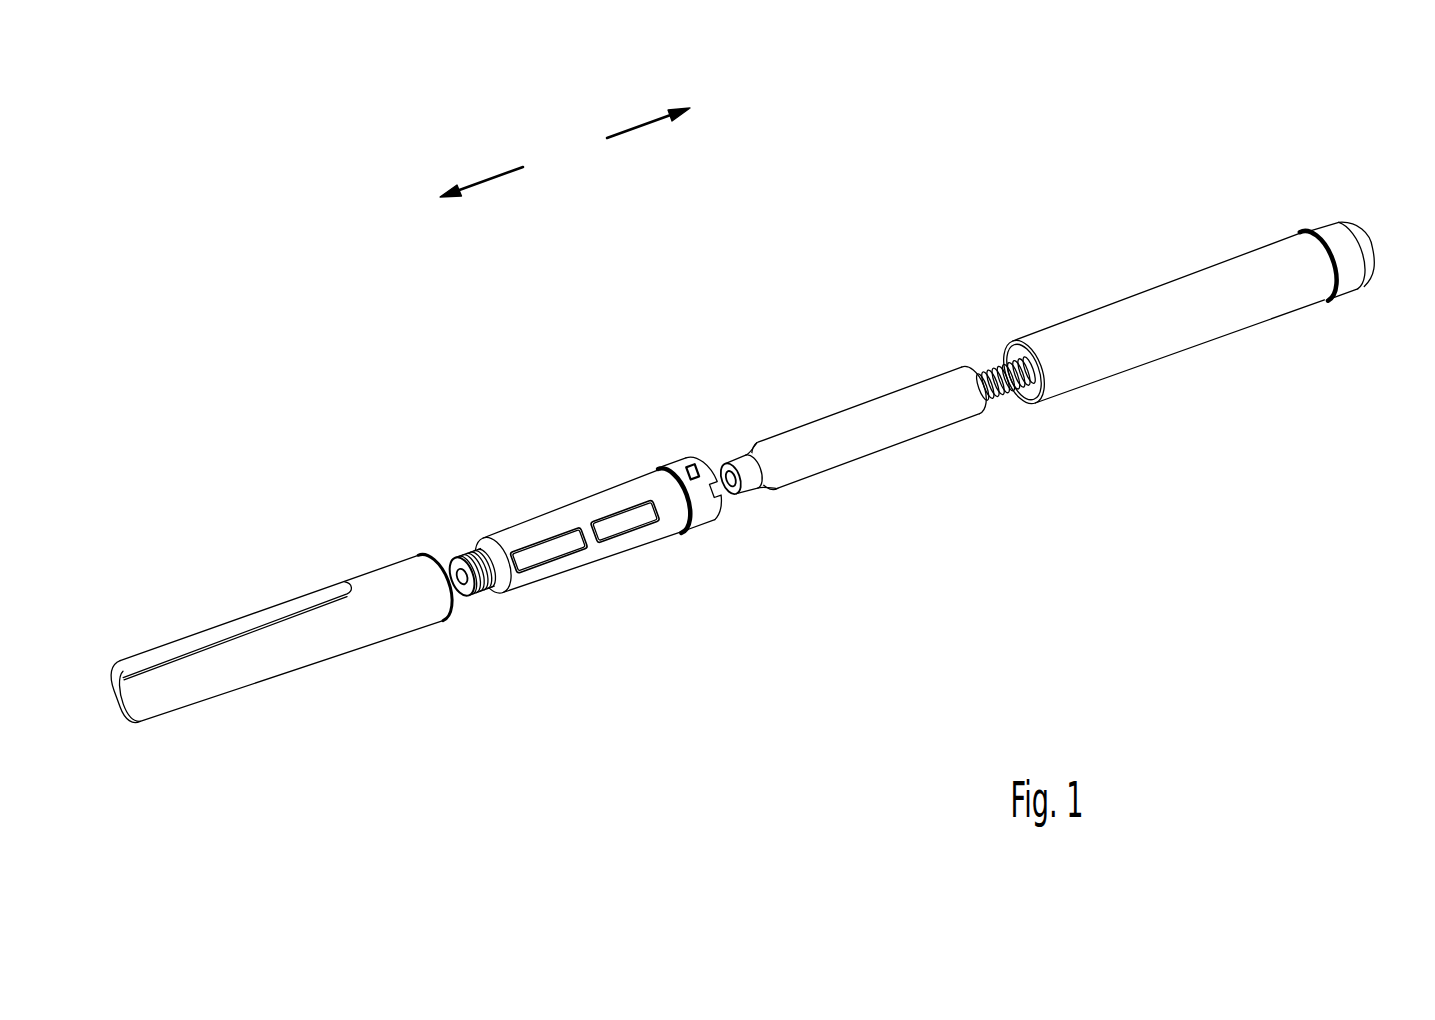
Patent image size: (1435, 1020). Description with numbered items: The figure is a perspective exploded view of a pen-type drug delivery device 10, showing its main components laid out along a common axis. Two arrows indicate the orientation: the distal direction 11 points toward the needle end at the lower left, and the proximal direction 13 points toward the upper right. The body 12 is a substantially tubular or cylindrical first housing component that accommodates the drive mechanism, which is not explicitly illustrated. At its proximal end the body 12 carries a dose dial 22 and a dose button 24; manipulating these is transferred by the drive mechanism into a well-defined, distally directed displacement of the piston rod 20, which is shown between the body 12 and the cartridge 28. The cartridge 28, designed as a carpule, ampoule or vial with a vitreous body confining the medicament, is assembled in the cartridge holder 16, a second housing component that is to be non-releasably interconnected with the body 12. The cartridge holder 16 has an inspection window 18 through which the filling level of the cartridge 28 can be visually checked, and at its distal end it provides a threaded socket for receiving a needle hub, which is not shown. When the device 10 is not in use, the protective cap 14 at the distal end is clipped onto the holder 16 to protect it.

The drug delivery device 10 is at (764, 400).
The distal direction 11 is at (502, 175).
The body 12 is at (1223, 283).
The proximal direction 13 is at (635, 127).
The protective cap 14 is at (280, 657).
The cartridge holder 16 is at (552, 528).
The inspection window 18 is at (622, 525).
The piston rod 20 is at (1002, 408).
The dose dial 22 is at (1332, 240).
The dose button 24 is at (1362, 252).
The cartridge 28 is at (843, 443).